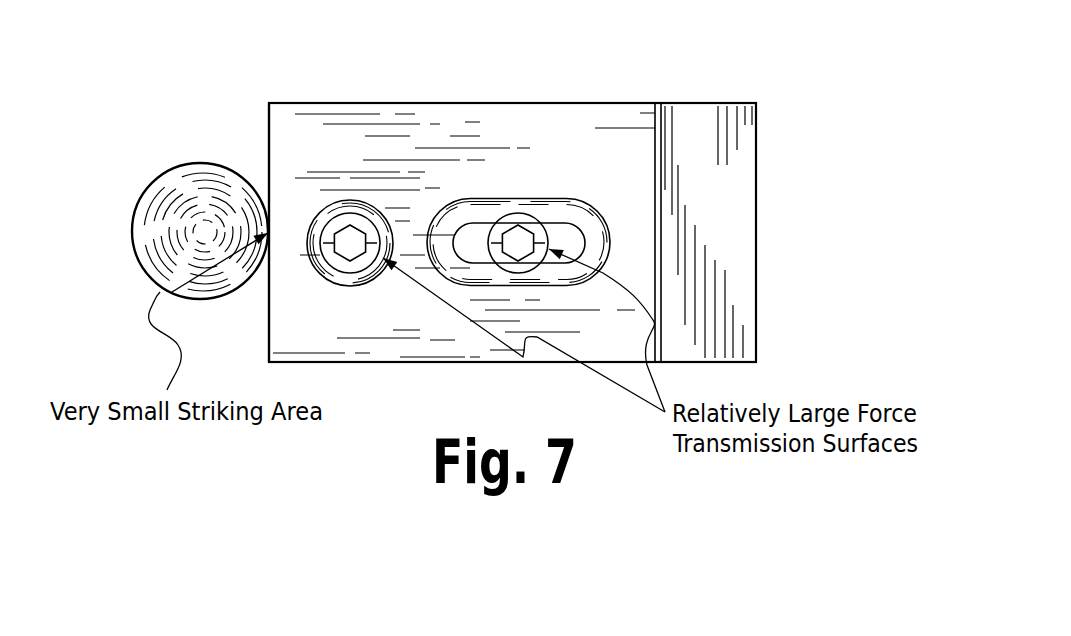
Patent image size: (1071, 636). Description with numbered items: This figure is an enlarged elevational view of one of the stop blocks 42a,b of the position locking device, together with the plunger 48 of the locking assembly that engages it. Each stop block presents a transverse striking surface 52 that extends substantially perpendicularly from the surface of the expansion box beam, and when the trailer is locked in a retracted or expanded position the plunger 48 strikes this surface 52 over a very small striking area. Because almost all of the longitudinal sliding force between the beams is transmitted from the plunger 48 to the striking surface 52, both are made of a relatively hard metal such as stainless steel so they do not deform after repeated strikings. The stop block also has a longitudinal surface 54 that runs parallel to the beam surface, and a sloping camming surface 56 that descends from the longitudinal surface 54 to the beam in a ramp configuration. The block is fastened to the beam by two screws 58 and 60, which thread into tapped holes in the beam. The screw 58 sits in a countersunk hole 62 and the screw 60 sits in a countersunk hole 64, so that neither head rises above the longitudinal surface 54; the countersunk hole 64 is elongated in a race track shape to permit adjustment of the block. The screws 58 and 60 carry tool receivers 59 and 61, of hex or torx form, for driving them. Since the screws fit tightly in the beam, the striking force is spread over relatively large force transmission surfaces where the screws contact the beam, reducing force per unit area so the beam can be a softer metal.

The stop blocks 42a,b is at (735, 70).
The plunger 48 is at (150, 187).
The transverse striking surface 52 is at (268, 128).
The longitudinal surface 54 is at (563, 144).
The sloping camming surface 56 is at (715, 149).
The screw 58 is at (335, 264).
The tool receiver 59 is at (353, 263).
The screw 60 is at (549, 252).
The tool receiver 61 is at (543, 267).
The countersunk hole 62 is at (325, 275).
The countersunk hole 64 is at (562, 205).